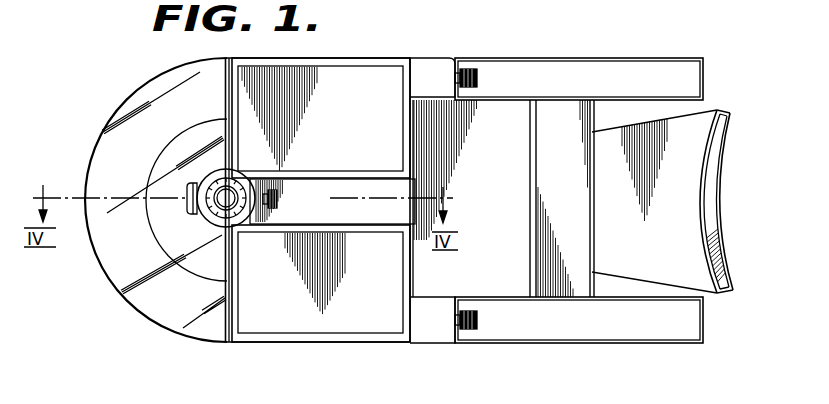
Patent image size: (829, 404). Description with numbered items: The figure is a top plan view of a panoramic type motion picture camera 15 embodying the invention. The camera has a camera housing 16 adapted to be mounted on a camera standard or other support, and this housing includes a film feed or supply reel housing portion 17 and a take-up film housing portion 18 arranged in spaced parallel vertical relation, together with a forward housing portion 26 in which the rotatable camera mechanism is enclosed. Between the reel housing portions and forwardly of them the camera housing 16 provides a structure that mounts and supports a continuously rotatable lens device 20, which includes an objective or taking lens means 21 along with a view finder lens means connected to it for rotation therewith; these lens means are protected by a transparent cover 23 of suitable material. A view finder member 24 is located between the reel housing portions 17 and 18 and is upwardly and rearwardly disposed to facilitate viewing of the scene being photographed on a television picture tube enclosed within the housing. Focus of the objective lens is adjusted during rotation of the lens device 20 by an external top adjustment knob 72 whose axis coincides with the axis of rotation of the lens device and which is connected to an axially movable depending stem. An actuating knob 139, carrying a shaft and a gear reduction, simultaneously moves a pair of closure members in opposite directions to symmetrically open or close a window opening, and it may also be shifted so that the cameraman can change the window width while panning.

The panoramic type motion picture camera 15 is at (433, 53).
The camera housing 16 is at (324, 345).
The film feed or supply reel housing portion 17 is at (563, 328).
The take-up film housing portion 18 is at (580, 68).
The continuously rotatable lens device 20 is at (186, 194).
The objective or taking lens means 21 is at (189, 209).
The transparent cover 23 is at (129, 97).
The view finder member 24 is at (697, 143).
The forward housing portion 26 is at (363, 80).
The external top adjustment knob 72 is at (229, 196).
The actuating knob 139 is at (277, 199).